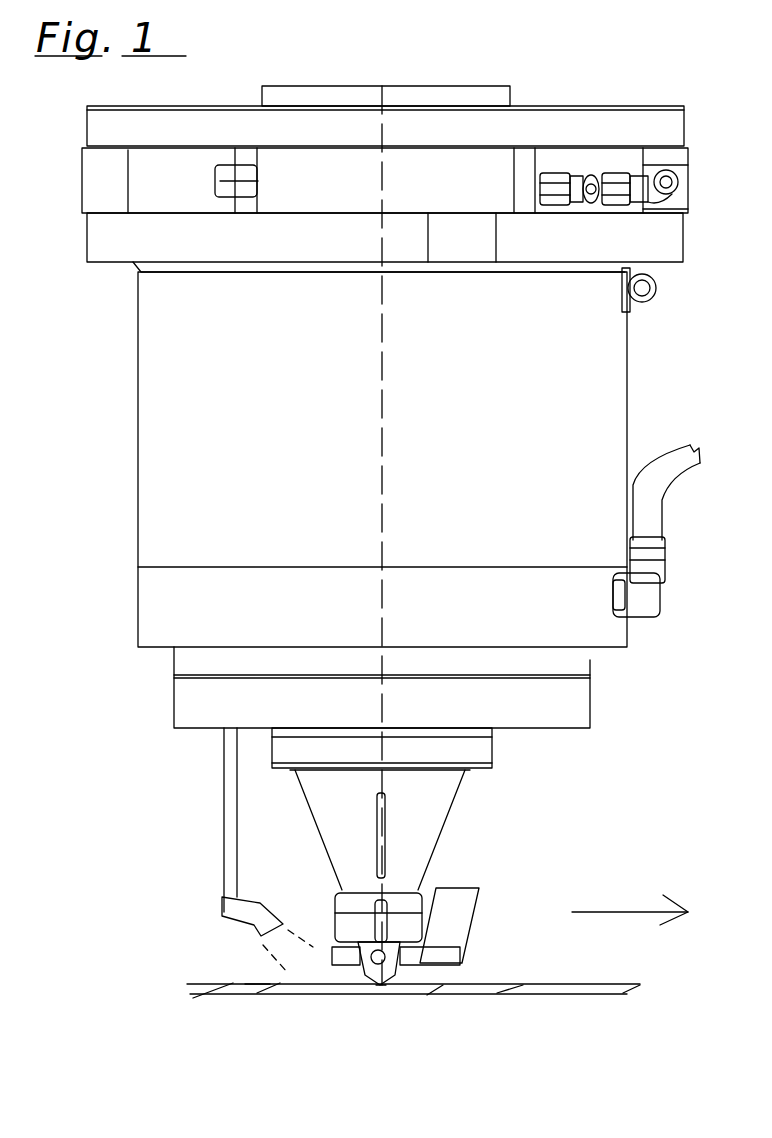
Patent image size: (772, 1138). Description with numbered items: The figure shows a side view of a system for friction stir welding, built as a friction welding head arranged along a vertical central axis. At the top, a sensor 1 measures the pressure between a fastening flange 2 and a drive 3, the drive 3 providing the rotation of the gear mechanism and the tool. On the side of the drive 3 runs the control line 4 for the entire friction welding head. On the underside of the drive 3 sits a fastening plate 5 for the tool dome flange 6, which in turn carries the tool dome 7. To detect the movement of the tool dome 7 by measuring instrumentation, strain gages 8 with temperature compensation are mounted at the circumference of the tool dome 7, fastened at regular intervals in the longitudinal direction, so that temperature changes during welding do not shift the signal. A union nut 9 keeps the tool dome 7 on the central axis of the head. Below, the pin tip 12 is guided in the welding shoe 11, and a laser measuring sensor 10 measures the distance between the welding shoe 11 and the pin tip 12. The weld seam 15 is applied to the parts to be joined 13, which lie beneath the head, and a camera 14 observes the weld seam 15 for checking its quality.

The sensor 1 is at (343, 175).
The fastening flange 2 is at (584, 108).
The drive 3 is at (580, 383).
The control line 4 is at (650, 499).
The fastening plate 5 is at (570, 693).
The tool dome flange 6 is at (480, 747).
The tool dome 7 is at (423, 782).
The strain gages 8 is at (383, 825).
The union nut 9 is at (405, 905).
The laser measuring sensor 10 is at (462, 948).
The welding shoe 11 is at (388, 968).
The pin tip 12 is at (383, 986).
The parts to be joined 13 is at (325, 993).
The camera 14 is at (268, 917).
The weld seam 15 is at (257, 983).